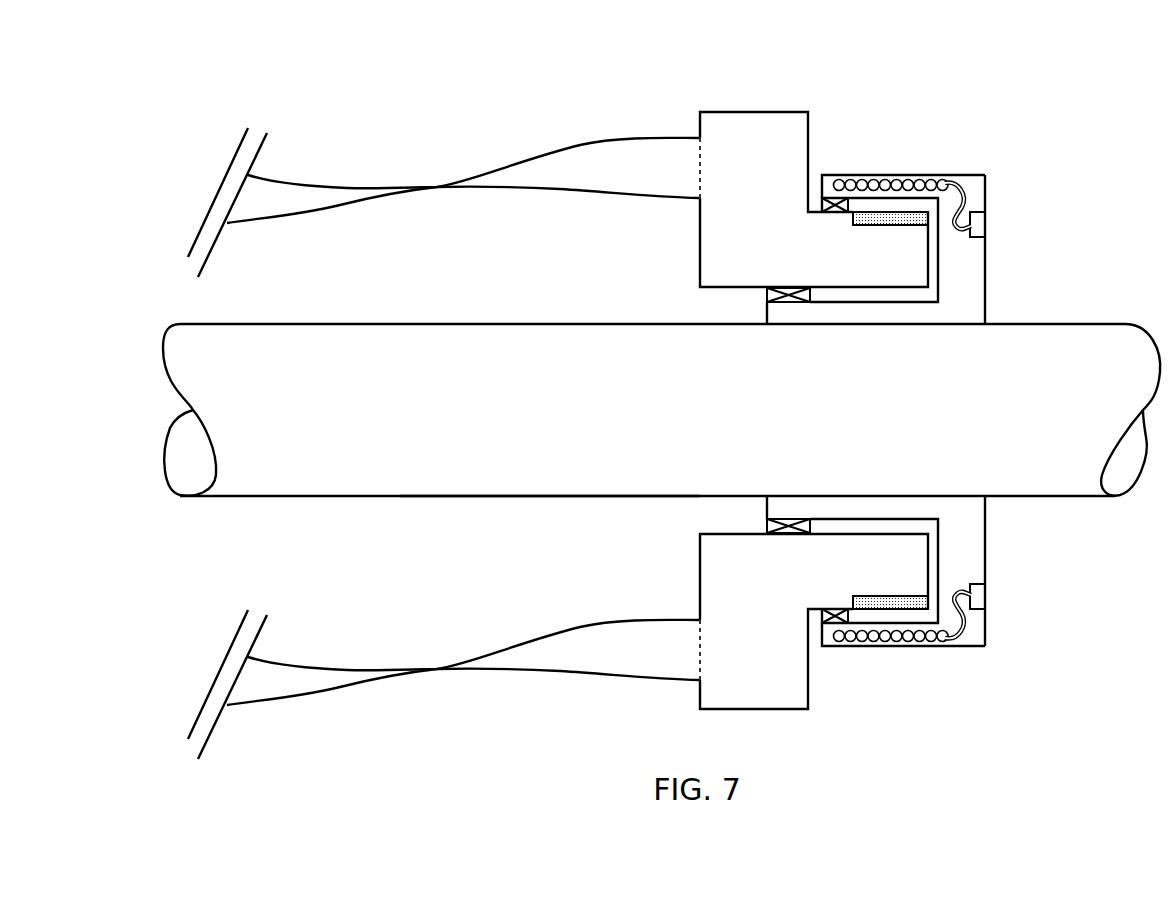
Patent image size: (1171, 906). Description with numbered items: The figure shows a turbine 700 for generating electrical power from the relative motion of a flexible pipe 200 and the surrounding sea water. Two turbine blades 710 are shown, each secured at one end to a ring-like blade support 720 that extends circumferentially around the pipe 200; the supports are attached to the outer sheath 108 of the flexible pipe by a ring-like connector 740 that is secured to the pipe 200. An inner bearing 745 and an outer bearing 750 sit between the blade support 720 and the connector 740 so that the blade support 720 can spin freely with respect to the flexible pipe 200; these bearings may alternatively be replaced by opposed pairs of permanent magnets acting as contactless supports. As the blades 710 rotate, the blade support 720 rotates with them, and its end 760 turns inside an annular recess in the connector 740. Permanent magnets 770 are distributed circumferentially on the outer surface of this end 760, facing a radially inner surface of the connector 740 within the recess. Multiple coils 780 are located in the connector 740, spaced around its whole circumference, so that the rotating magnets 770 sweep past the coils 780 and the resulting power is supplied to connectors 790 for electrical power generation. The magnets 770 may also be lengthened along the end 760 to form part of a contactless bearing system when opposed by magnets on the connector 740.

The turbine 700 is at (1053, 118).
The turbine blades 710 is at (618, 157).
The ring-like blade support 720 is at (720, 240).
The ring-like connector 740 is at (965, 298).
The inner bearing 745 is at (767, 293).
The outer bearing 750 is at (820, 206).
The end of the blade support 760 is at (860, 268).
The permanent magnets 770 is at (853, 220).
The coils 780 is at (870, 181).
The connectors 790 is at (984, 222).
The pipe 200 is at (455, 423).
The outer sheath 108 is at (463, 477).